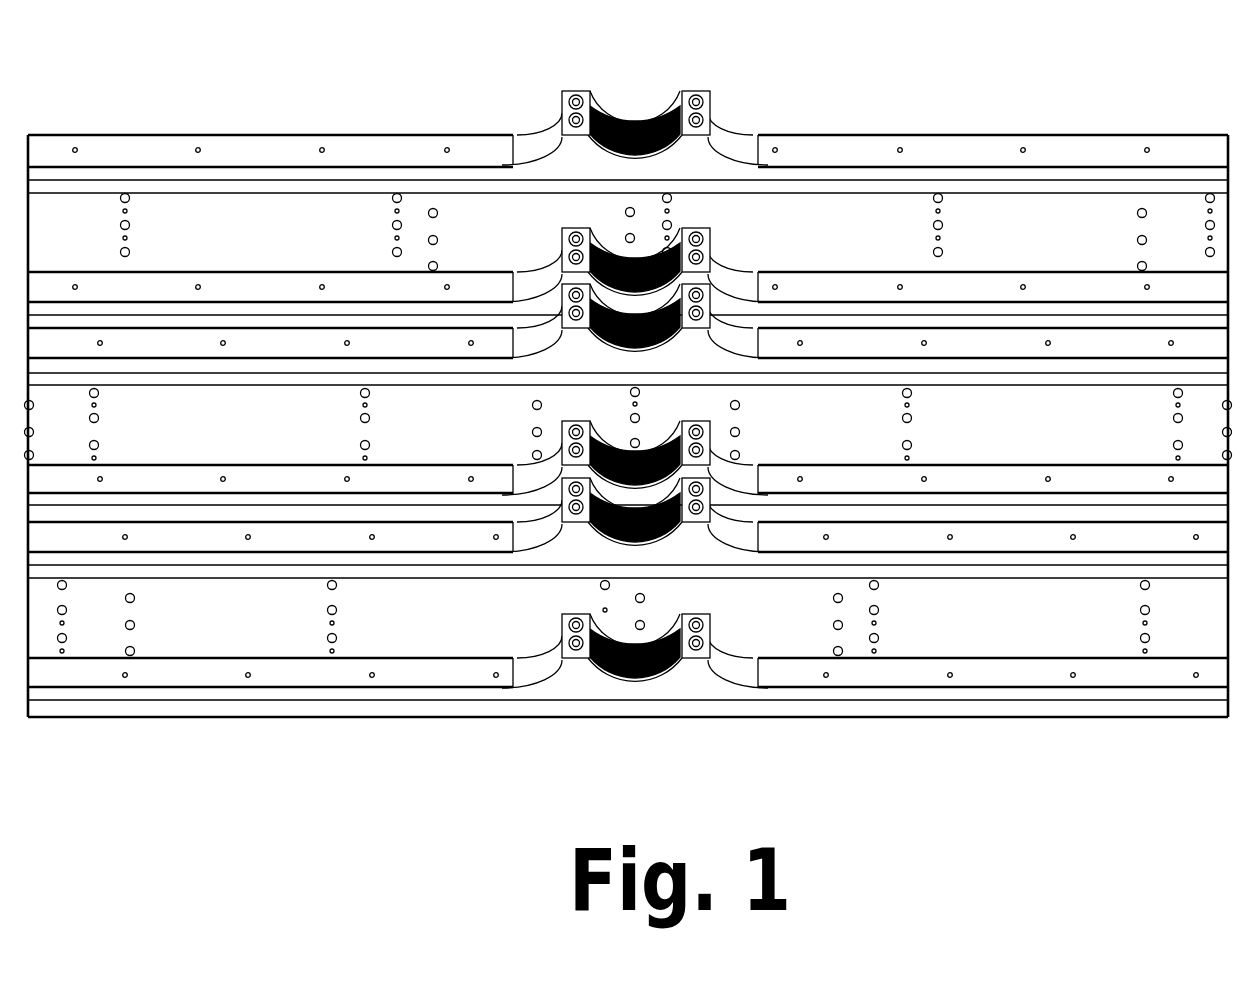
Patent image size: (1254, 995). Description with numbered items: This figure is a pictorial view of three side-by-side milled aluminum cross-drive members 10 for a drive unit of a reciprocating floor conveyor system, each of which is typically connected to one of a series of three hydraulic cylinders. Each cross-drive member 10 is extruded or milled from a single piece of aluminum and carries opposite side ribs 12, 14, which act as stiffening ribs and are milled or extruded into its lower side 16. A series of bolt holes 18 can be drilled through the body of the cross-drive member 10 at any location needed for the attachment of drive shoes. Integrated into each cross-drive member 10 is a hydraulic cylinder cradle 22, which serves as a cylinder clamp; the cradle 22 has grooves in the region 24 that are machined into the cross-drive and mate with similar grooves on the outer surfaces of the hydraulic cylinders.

The cross-drive member 10 is at (862, 133).
The side rib 12 is at (347, 158).
The side rib 14 is at (398, 305).
The lower side 16 is at (1023, 217).
The bolt holes 18 is at (126, 180).
The hydraulic cylinder cradle 22 is at (630, 120).
The grooved region of cradle 24 is at (640, 264).